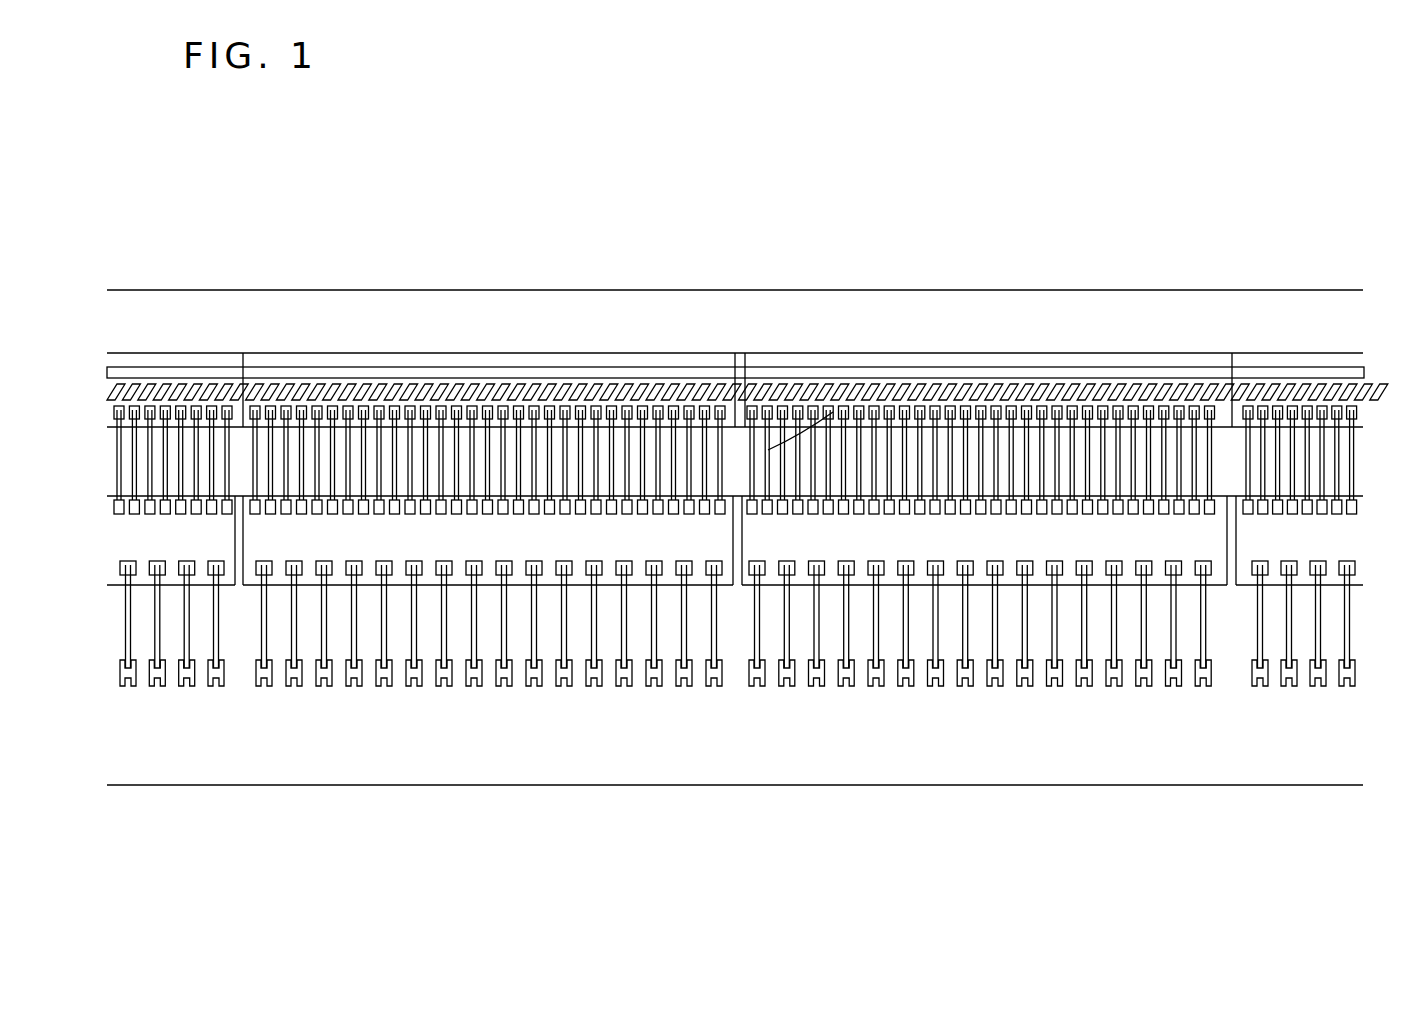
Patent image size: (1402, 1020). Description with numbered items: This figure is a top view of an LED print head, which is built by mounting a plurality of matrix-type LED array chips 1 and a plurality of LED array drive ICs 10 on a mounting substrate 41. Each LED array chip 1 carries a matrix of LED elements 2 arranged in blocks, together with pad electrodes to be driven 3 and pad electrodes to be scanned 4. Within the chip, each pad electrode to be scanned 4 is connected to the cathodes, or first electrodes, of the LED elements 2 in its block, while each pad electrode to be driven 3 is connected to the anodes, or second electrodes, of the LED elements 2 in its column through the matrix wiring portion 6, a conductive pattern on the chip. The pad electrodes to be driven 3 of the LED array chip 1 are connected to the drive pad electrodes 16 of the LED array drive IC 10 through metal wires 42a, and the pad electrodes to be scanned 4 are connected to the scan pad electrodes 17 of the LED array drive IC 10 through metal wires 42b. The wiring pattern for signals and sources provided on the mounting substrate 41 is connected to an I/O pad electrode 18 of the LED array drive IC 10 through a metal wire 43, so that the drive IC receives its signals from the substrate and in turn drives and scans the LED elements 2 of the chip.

The matrix-type LED array chip 1 is at (980, 350).
The LED element 2 is at (1090, 360).
The pad electrode to be driven 3 is at (733, 415).
The pad electrode to be scanned 4 is at (768, 450).
The matrix wiring portion 6 is at (1165, 395).
The LED array drive IC 10 is at (968, 525).
The drive pad electrode 16 is at (752, 512).
The scan pad electrode 17 is at (767, 512).
The I/O pad electrode 18 is at (1222, 572).
The mounting substrate 41 is at (540, 322).
The metal wire 42a is at (748, 460).
The metal wire 42b is at (835, 417).
The metal wire 43 is at (1060, 590).